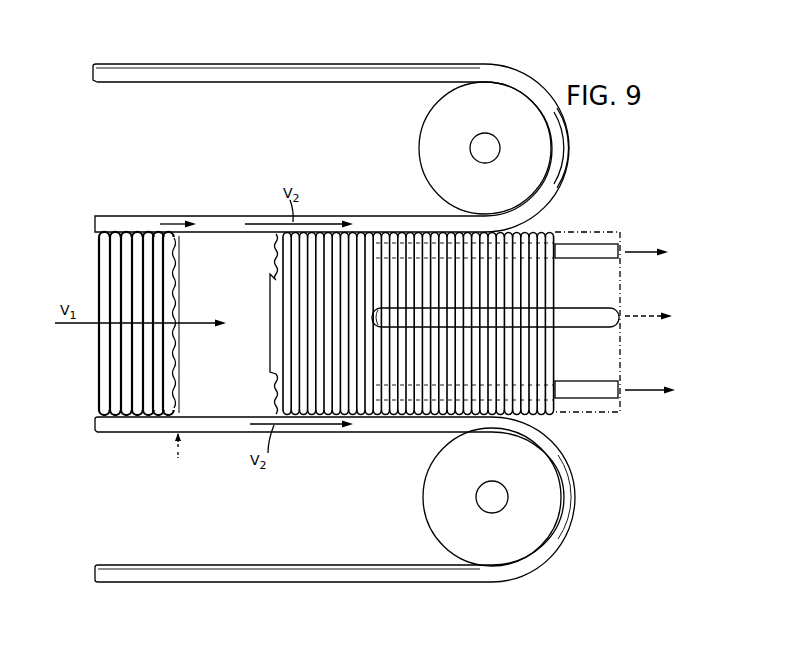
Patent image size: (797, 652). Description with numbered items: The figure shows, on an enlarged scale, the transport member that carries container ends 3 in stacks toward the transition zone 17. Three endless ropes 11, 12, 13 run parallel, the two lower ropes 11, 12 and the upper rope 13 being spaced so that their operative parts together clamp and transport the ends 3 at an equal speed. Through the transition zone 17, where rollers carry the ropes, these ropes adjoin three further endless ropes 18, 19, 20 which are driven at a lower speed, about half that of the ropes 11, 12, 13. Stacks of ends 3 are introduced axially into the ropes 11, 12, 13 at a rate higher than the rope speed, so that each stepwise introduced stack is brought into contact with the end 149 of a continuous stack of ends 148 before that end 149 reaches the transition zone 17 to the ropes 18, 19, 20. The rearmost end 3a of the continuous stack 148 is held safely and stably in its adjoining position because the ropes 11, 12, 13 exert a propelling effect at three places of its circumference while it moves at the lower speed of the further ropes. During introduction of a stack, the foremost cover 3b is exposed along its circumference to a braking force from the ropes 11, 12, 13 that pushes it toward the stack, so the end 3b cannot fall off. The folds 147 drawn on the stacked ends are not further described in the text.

The transition zone 17 is at (545, 55).
The endless rope 11 is at (395, 222).
The folds / pleats 147 is at (276, 236).
The rearmost end 3a is at (270, 284).
The foremost cover 3b is at (183, 288).
The end 3 is at (323, 416).
The end of continuous stack 149 is at (258, 359).
The continuous stack of ends 148 is at (330, 322).
The endless rope 18 is at (582, 322).
The endless rope 19 is at (586, 250).
The endless rope 20 is at (592, 382).
The endless rope 12 is at (376, 420).
The endless rope 13 is at (497, 497).